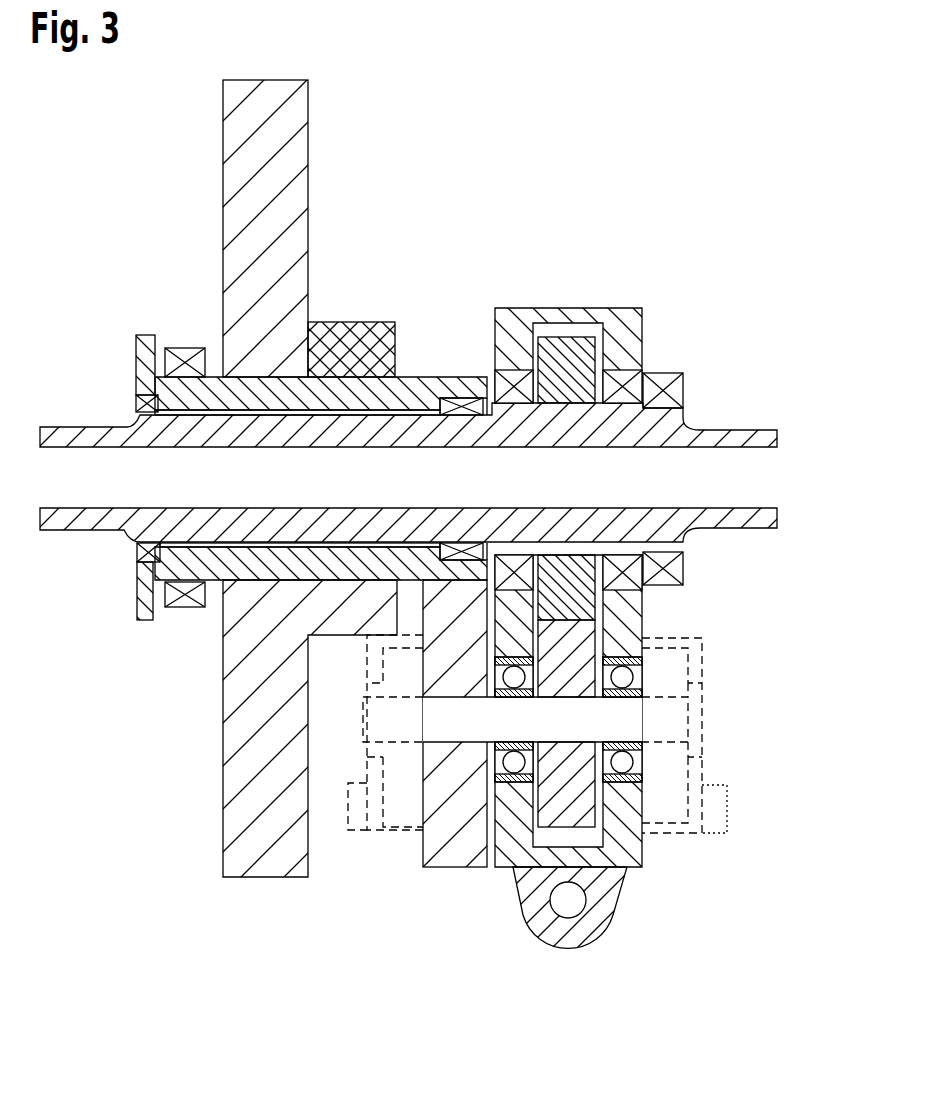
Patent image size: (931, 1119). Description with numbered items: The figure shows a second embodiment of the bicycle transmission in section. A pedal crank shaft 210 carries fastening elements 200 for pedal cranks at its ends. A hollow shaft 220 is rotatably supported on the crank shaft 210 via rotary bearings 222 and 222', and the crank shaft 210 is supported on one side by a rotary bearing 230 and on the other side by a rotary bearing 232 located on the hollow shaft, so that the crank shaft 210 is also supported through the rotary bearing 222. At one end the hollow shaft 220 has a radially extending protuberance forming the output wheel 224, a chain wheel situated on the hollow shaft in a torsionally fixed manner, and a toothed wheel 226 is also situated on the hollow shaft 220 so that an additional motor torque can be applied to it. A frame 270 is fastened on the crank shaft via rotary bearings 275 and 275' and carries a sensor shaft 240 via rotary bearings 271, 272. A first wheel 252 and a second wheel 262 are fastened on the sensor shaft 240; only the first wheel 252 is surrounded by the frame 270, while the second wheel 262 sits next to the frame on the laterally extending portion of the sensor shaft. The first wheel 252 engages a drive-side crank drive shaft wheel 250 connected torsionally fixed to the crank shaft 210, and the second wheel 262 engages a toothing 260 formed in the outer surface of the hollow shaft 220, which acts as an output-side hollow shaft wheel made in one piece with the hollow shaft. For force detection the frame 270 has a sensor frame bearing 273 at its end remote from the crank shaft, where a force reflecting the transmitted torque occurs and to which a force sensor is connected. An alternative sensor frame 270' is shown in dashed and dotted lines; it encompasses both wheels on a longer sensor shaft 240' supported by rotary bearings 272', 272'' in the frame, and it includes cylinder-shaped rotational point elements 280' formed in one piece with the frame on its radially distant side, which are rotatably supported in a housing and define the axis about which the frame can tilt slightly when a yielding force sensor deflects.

The fastening elements 200 is at (83, 433).
The pedal crank shaft 210 is at (140, 528).
The hollow shaft 220 is at (408, 377).
The rotary bearing 222 is at (105, 373).
The rotary bearing 222' is at (305, 356).
The output wheel 224 is at (143, 345).
The toothed wheel 226 is at (290, 175).
The rotary bearing 230 is at (683, 572).
The rotary bearing 232 is at (178, 362).
The sensor shaft 240 is at (604, 681).
The sensor shaft 240' is at (286, 728).
The drive-side crank drive shaft wheel 250 is at (565, 343).
The first wheel 252 is at (560, 810).
The toothing 260 is at (487, 377).
The second wheel 262 is at (458, 848).
The frame 270 is at (568, 554).
The sensor frame 270' is at (717, 735).
The rotary bearing 271 is at (642, 662).
The rotary bearing 272 is at (421, 717).
The rotary bearing 272' is at (286, 732).
The rotary bearing 272'' is at (720, 735).
The sensor frame bearing 273 is at (605, 907).
The rotary bearing 275 is at (566, 415).
The rotary bearing 275' is at (682, 368).
The rotational point elements 280' is at (570, 846).